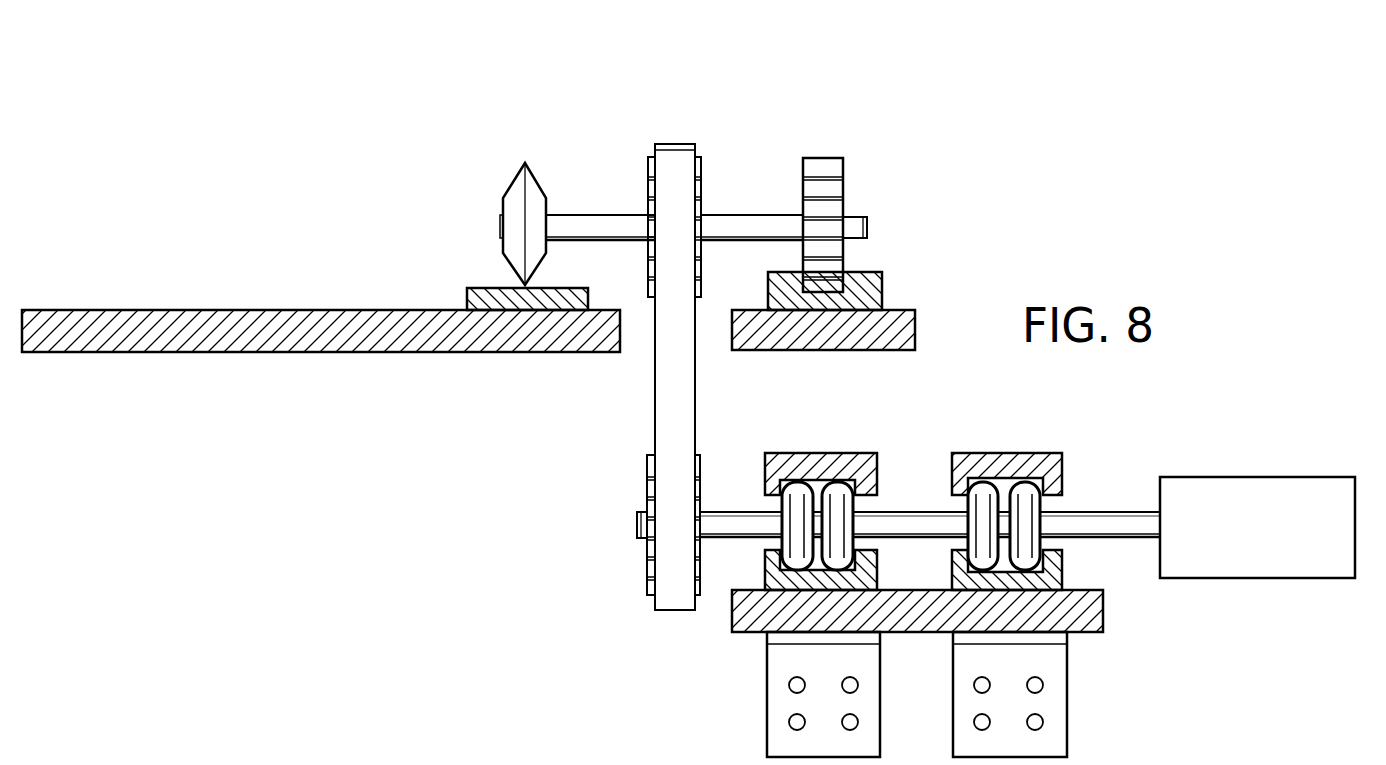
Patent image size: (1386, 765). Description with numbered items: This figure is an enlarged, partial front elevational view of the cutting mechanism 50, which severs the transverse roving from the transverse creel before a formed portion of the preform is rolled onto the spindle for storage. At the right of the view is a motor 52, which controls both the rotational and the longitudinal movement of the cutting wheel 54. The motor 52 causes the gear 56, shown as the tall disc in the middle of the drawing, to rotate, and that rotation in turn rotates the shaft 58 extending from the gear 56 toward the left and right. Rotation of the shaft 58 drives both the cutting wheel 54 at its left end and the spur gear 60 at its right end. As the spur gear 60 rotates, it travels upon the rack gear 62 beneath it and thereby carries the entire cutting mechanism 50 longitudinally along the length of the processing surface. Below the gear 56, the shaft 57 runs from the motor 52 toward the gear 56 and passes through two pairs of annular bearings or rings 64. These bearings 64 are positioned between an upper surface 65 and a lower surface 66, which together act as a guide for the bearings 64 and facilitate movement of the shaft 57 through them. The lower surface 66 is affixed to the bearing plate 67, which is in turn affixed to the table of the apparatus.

The cutting mechanism 50 is at (988, 152).
The motor 52 is at (1233, 537).
The cutting wheel 54 is at (511, 186).
The gear 56 is at (701, 467).
The shaft 57 is at (1100, 516).
The shaft 58 is at (748, 226).
The spur gear 60 is at (819, 166).
The rack gear 62 is at (880, 306).
The annular bearings 64 is at (784, 540).
The upper surface 65 is at (839, 460).
The lower surface 66 is at (952, 580).
The bearing plate 67 is at (741, 632).